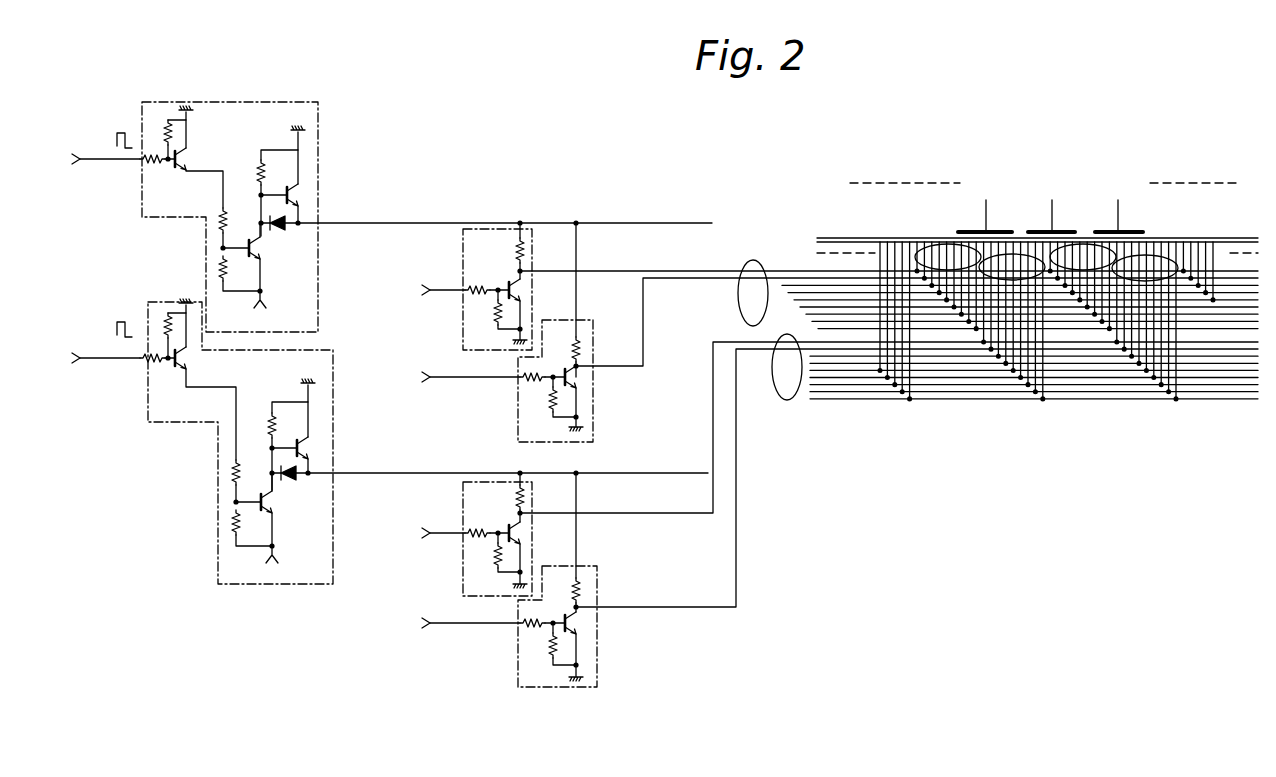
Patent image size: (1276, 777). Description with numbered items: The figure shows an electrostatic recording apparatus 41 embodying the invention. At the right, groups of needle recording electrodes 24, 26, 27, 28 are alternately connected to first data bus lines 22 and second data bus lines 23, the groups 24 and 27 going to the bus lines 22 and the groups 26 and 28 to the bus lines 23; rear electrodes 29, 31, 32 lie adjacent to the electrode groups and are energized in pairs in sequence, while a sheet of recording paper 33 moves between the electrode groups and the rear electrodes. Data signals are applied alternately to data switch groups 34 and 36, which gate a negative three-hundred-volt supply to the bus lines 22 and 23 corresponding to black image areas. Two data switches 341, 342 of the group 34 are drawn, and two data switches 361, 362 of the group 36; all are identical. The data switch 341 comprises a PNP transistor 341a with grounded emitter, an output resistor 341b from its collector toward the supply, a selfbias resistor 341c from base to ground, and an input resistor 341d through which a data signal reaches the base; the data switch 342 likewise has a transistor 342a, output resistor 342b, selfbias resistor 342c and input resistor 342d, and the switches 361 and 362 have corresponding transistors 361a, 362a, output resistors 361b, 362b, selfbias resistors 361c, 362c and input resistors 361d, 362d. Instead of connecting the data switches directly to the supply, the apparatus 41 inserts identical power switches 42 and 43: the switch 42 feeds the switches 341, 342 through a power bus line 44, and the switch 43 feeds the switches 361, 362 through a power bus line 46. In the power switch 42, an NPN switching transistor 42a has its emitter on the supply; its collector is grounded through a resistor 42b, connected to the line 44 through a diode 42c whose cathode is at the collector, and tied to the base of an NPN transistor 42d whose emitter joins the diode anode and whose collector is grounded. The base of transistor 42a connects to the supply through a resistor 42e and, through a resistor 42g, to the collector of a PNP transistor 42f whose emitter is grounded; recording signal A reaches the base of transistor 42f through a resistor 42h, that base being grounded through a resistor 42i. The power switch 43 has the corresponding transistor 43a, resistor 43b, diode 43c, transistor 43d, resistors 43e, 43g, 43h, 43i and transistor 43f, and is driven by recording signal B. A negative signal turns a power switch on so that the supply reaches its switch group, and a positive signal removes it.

The first data bus lines 22 is at (757, 262).
The second data bus lines 23 is at (787, 400).
The recording electrode group 24 is at (931, 244).
The recording electrode group 26 is at (1012, 254).
The recording electrode group 27 is at (1085, 243).
The recording electrode group 28 is at (1145, 255).
The rear electrode 29 is at (962, 230).
The rear electrode 31 is at (1047, 228).
The rear electrode 32 is at (1110, 228).
The recording paper 33 is at (855, 238).
The data switch group 34 is at (498, 222).
The data switch group 36 is at (632, 553).
The electrostatic recording apparatus 41 is at (476, 150).
The power switch 42 is at (318, 102).
The power switch 43 is at (333, 350).
The power bus line 44 is at (392, 223).
The power bus line 46 is at (416, 473).
The NPN switching transistor 42a is at (262, 255).
The resistor 42b is at (261, 170).
The diode 42c is at (281, 228).
The NPN transistor 42d is at (293, 191).
The resistor 42e is at (223, 268).
The PNP transistor 42f is at (175, 168).
The resistor 42g is at (223, 222).
The resistor 42h is at (149, 162).
The resistor 42i is at (167, 118).
The NPN switching transistor 43a is at (277, 519).
The resistor 43b is at (272, 425).
The diode 43c is at (291, 479).
The NPN transistor 43d is at (308, 450).
The resistor 43e is at (236, 526).
The PNP transistor 43f is at (187, 355).
The resistor 43g is at (236, 475).
The resistor 43h is at (153, 365).
The resistor 43i is at (166, 315).
The data switch 341 is at (527, 224).
The PNP transistor 341a is at (518, 292).
The output resistor 341b is at (520, 250).
The selfbias resistor 341c is at (498, 310).
The input resistor 341d is at (478, 288).
The data switch 342 is at (592, 325).
The PNP transistor 342a is at (586, 386).
The output resistor 342b is at (578, 348).
The selfbias resistor 342c is at (545, 401).
The input resistor 342d is at (527, 380).
The data switch 361 is at (559, 486).
The PNP transistor 361a is at (528, 535).
The output resistor 361b is at (520, 498).
The selfbias resistor 361c is at (498, 553).
The input resistor 361d is at (478, 533).
The data switch 362 is at (597, 602).
The PNP transistor 362a is at (586, 632).
The output resistor 362b is at (580, 590).
The selfbias resistor 362c is at (546, 649).
The input resistor 362d is at (527, 628).